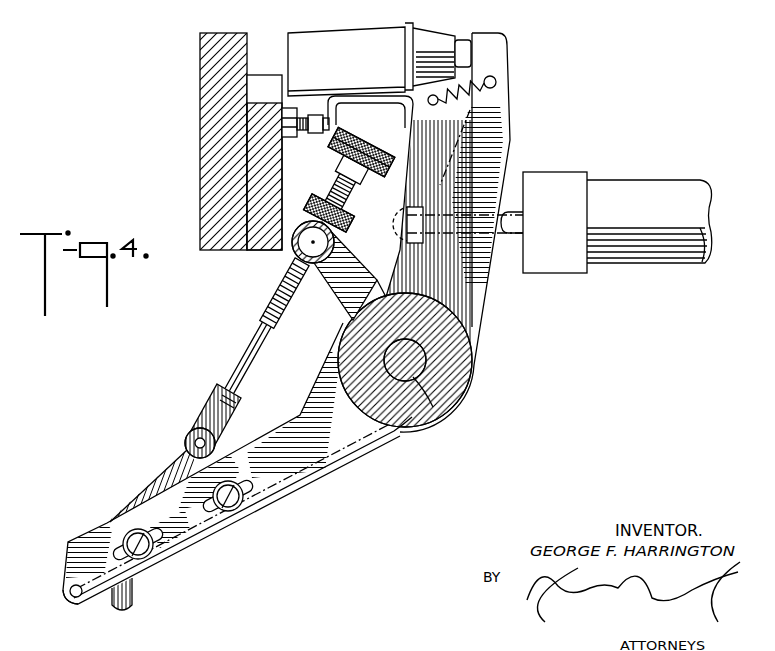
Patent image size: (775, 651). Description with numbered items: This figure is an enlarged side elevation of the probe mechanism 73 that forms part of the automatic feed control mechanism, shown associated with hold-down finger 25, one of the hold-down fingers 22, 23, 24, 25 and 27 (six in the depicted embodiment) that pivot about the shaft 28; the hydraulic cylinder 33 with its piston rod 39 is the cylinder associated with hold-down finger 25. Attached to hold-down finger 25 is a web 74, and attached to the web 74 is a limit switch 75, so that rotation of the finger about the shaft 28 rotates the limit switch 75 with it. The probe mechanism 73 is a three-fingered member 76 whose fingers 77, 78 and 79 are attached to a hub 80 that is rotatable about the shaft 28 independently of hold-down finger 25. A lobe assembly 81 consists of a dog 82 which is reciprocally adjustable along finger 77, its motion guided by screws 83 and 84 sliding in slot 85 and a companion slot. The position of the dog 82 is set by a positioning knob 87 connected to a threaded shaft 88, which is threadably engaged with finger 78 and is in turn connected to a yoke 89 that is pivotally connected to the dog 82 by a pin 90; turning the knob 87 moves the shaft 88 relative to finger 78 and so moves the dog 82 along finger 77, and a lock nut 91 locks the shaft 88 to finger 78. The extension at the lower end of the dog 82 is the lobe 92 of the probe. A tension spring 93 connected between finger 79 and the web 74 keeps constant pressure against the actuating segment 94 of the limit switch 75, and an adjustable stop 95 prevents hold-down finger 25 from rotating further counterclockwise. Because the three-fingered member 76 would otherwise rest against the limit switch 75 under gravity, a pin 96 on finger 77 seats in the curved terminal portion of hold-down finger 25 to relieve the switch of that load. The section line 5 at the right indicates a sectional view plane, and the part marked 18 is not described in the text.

The hold-down finger 27 is at (216, 125).
The limit switch 75 is at (375, 6).
The actuating segment 94 is at (462, 42).
The tension spring 93 is at (498, 76).
The finger 79 is at (511, 104).
The web 74 is at (423, 133).
The adjustable stop 95 is at (318, 137).
The lock nut 91 is at (318, 194).
The positioning knob 87 is at (388, 168).
The pivot pin 18 is at (313, 272).
The finger 78 is at (326, 290).
The threaded shaft 88 is at (257, 325).
The yoke 89 is at (215, 390).
The pin 90 is at (193, 437).
The probe mechanism 73 is at (166, 397).
The 3-fingered member 76 is at (333, 385).
The finger 77 is at (282, 440).
The hub 80 is at (477, 382).
The shaft 28 is at (445, 416).
The piston rod 39 is at (504, 236).
The hydraulic cylinder 33 is at (623, 258).
The dog 82 is at (156, 472).
The lobe assembly 81 is at (102, 510).
The screw 84 is at (146, 550).
The screw 83 is at (231, 508).
The slot 85 is at (258, 494).
The lobe 92 is at (134, 603).
The pin 96 is at (71, 592).
The hold-down finger 25 is at (83, 606).
The section line 5- 5 is at (720, 107).
The hold-down finger 24 is at (507, 4).
The hold-down finger 23 is at (595, 5).
The hold-down finger 22 is at (692, 4).